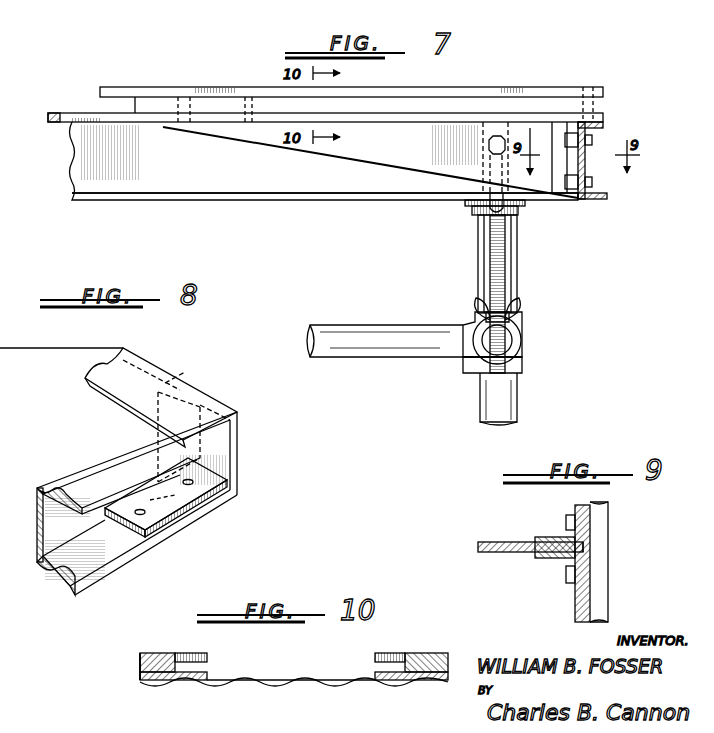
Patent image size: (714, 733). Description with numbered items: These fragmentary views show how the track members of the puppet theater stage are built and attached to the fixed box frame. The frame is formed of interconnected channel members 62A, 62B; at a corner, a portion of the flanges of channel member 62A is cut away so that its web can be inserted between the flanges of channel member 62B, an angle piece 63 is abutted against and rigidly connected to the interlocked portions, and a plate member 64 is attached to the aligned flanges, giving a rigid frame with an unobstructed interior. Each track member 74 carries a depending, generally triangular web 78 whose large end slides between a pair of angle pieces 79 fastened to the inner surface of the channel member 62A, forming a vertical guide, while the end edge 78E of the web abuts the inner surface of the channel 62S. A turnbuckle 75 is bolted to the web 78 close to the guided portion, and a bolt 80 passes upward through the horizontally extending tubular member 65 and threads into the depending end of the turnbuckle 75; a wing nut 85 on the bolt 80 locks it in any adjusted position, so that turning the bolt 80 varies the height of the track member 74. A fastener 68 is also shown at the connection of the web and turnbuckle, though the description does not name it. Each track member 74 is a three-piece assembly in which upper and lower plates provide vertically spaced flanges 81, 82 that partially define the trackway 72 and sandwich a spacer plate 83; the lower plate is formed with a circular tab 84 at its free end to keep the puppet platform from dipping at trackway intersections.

In FIG. 7, the channel member 62A is at (590, 170).
In FIG. 8, the channel member 62A is at (128, 436).
In FIG. 9, the channel member 62A is at (610, 605).
In FIG. 7, the channel member 62B is at (142, 185).
In FIG. 8, the channel member 62B is at (240, 450).
In FIG. 9, the channel 62S is at (578, 598).
In FIG. 8, the angle piece 63 is at (172, 390).
In FIG. 8, the plate member 64 is at (195, 490).
In FIG. 7, the tubular member 65 is at (522, 349).
In FIG. 7, the bolt 68 is at (471, 207).
In FIG. 10, the trackway 72 is at (298, 659).
In FIG. 7, the track member 74 is at (477, 88).
In FIG. 10, the track member 74 is at (158, 655).
In FIG. 7, the turnbuckle 75 is at (512, 220).
In FIG. 7, the web 78 is at (385, 160).
In FIG. 9, the web 78 is at (505, 540).
In FIG. 9, the end edge 78E is at (583, 548).
In FIG. 7, the angle pieces 79 is at (562, 198).
In FIG. 9, the angle pieces 79 is at (553, 537).
In FIG. 7, the bolt 80 is at (505, 266).
In FIG. 7, the flange 81 is at (125, 93).
In FIG. 10, the flange 81 is at (207, 657).
In FIG. 7, the flange 82 is at (150, 122).
In FIG. 10, the flange 82 is at (207, 678).
In FIG. 10, the spacer plate 83 is at (140, 660).
In FIG. 7, the tab 84 is at (50, 114).
In FIG. 7, the wing nut 85 is at (516, 302).